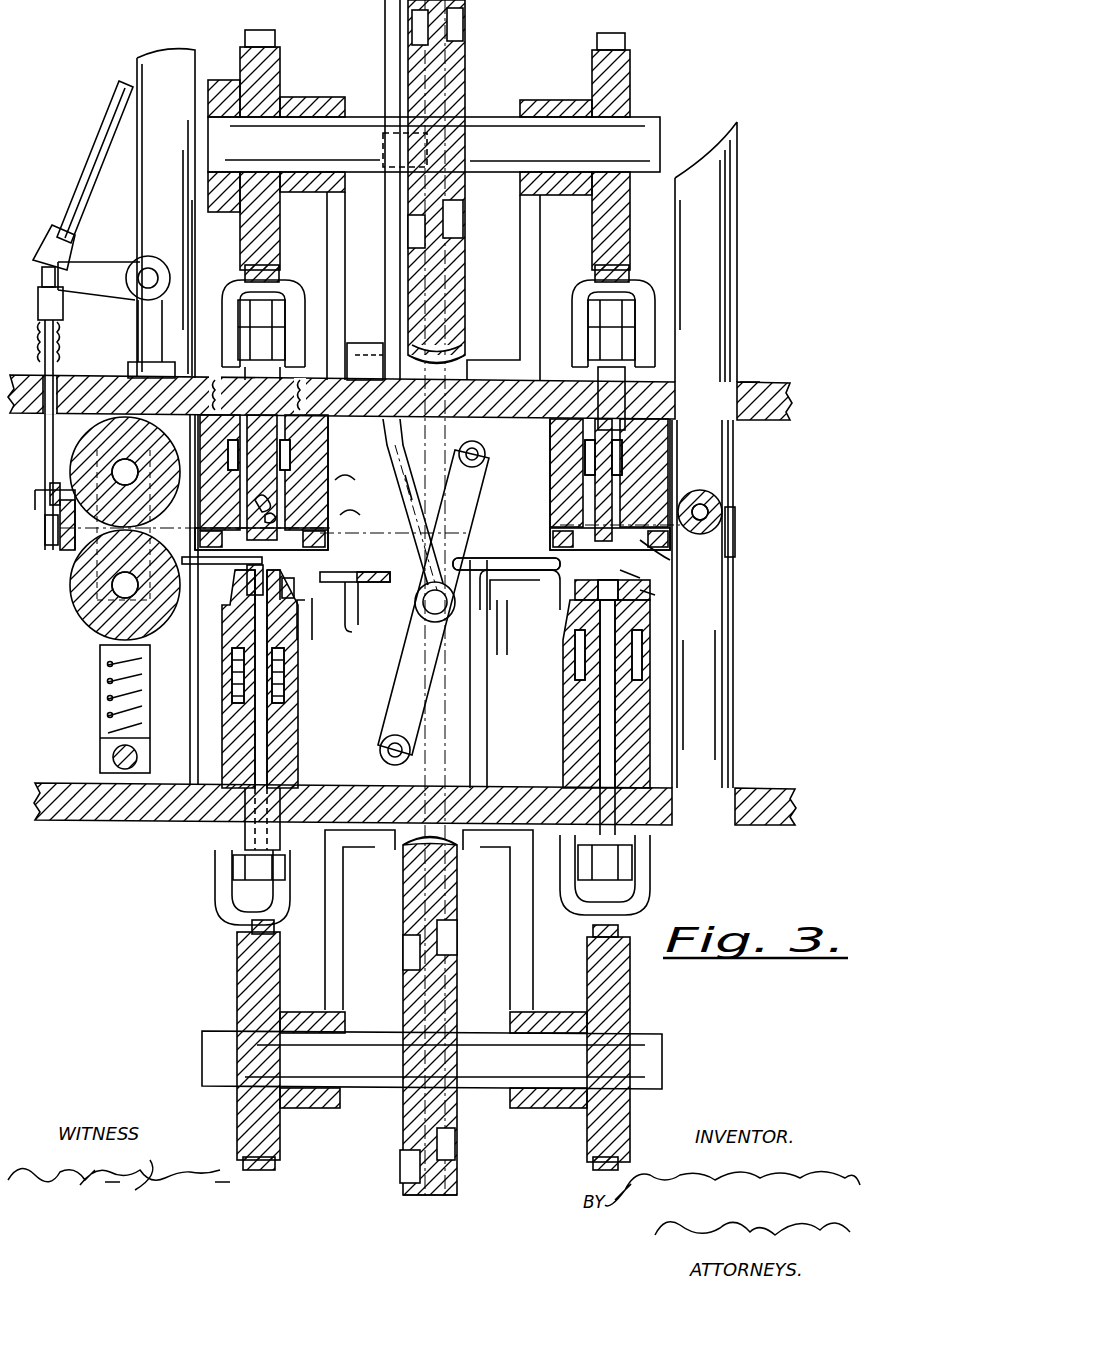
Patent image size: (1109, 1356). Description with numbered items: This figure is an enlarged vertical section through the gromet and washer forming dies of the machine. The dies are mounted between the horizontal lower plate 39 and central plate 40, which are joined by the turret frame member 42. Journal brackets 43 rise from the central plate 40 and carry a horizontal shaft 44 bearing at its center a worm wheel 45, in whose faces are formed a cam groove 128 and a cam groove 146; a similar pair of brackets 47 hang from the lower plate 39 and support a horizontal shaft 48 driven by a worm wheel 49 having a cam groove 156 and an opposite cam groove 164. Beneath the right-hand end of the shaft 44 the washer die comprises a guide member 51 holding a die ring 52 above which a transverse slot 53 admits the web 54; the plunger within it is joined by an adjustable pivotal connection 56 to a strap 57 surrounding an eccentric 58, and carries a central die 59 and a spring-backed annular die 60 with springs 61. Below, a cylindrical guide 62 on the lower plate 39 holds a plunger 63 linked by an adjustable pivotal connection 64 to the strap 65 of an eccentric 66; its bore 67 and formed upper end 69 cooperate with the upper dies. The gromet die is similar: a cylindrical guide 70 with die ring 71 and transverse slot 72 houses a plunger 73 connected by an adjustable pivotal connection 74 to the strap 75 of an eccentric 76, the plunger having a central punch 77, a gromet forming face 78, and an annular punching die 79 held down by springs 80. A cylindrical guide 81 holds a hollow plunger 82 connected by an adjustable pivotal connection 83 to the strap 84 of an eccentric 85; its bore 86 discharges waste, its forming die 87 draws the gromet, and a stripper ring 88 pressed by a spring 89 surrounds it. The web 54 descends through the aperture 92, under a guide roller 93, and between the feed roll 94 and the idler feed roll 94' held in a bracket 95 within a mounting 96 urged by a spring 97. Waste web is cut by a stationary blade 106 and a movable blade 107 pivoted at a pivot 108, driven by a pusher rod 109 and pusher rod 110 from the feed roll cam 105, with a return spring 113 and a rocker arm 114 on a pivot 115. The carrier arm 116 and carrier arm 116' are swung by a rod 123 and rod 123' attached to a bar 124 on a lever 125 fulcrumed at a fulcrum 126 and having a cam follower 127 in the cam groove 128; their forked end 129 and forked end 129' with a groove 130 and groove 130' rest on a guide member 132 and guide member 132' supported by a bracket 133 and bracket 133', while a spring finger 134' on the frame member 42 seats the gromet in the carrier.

The lower plate 39 is at (765, 792).
The central plate 40 is at (792, 398).
The turret frame member 42 is at (158, 221).
The journal brackets 43 is at (338, 240).
The horizontal shaft 44 is at (480, 135).
The worm wheel 45 is at (438, 12).
The brackets 47 is at (330, 932).
The horizontal shaft 48 is at (372, 1060).
The worm wheel 49 is at (437, 1175).
The guide member 51 is at (552, 460).
The die ring 52 is at (670, 560).
The transverse slot 53 is at (595, 415).
The web 54 is at (408, 478).
The adjustable pivotal connection 56 is at (585, 310).
The strap 57 is at (612, 45).
The eccentric 58 is at (600, 208).
The central die 59 is at (598, 498).
The annular die 60 is at (590, 505).
The springs 61 is at (640, 465).
The cylindrical guide 62 is at (568, 745).
The plunger 63 is at (580, 705).
The adjustable pivotal connection 64 is at (590, 875).
The strap 65 is at (620, 930).
The eccentric 66 is at (610, 710).
The bore 67 is at (640, 590).
The formed upper end 69 is at (575, 598).
The cylindrical guide 70 is at (282, 470).
The die ring 71 is at (282, 590).
The transverse slot 72 is at (280, 510).
The plunger 73 is at (290, 485).
The adjustable pivotal connection 74 is at (268, 340).
The strap 75 is at (262, 38).
The eccentric 76 is at (265, 225).
The central punch 77 is at (340, 500).
The gromet forming face 78 is at (320, 550).
The annular punching die 79 is at (280, 460).
The springs 80 is at (280, 450).
The cylindrical guide 81 is at (287, 670).
The plunger 82 is at (285, 712).
The adjustable pivotal connection 83 is at (245, 885).
The strap 84 is at (250, 928).
The eccentric 85 is at (248, 962).
The bore 86 is at (270, 760).
The forming die 87 is at (235, 615).
The stripper ring 88 is at (232, 650).
The spring 89 is at (225, 695).
The aperture 92 is at (745, 381).
The guide roller 93 is at (723, 500).
The feed roll 94 is at (94, 472).
The feed roll 94' is at (104, 585).
The bracket 95 is at (95, 755).
The mounting 96 is at (90, 709).
The spring 97 is at (108, 653).
The feed roll cam 105 is at (222, 88).
The stationary blade 106 is at (65, 552).
The movable blade 107 is at (50, 510).
The pivot 108 is at (48, 535).
The pusher rod 109 is at (56, 362).
The pusher rod 110 is at (106, 129).
The spring 113 is at (62, 333).
The rocker arm 114 is at (99, 281).
The pivot 115 is at (130, 268).
The carrier arm 116 is at (506, 554).
The carrier arm 116' is at (294, 565).
The rod 123 is at (492, 449).
The rod 123' is at (421, 749).
The bar 124 is at (433, 602).
The lever 125 is at (458, 455).
The fulcrum 126 is at (362, 345).
The cam follower 127 is at (415, 142).
The cam groove 128 is at (413, 28).
The forked end 129 is at (520, 590).
The forked end 129' is at (400, 607).
The groove 130 is at (561, 494).
The groove 130' is at (310, 562).
The guide member 132 is at (511, 627).
The guide member 132' is at (346, 619).
The bracket 133 is at (463, 674).
The bracket 133' is at (314, 607).
The spring finger 134' is at (261, 483).
The cam groove 146 is at (448, 228).
The cam groove 156 is at (447, 936).
The cam groove 164 is at (405, 1168).